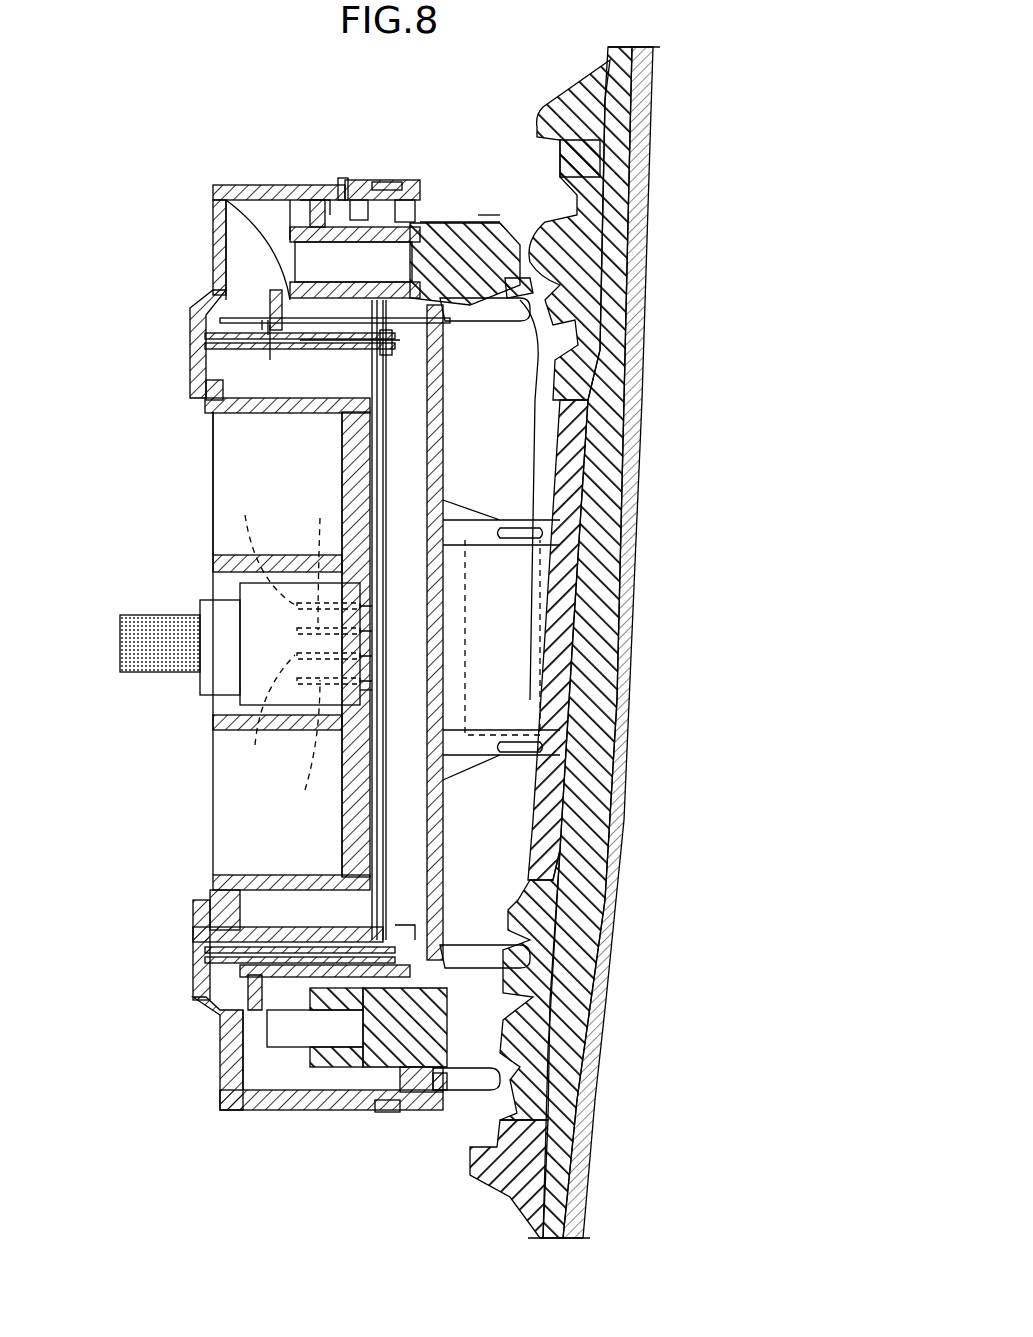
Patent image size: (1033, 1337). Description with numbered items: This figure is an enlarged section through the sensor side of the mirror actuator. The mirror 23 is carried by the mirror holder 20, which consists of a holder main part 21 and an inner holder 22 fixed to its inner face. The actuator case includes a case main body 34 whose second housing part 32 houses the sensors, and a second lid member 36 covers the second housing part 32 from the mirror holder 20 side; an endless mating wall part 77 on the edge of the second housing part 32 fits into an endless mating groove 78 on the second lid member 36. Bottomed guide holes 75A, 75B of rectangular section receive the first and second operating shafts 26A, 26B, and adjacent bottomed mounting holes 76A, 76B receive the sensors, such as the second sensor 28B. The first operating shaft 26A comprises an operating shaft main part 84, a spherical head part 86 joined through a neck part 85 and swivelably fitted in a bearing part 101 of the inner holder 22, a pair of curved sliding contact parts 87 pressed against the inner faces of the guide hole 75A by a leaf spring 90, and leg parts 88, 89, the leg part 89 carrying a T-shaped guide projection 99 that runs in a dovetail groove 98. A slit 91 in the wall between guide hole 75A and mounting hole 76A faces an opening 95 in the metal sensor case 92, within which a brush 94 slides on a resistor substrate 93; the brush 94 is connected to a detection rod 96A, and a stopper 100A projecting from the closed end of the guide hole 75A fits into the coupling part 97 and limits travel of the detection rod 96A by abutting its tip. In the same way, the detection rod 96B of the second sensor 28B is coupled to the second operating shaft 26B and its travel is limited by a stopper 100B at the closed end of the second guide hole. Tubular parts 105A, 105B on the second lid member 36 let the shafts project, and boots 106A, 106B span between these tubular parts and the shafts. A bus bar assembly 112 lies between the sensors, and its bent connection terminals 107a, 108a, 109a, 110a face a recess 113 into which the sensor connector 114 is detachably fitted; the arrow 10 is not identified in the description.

The connector insertion direction 10 is at (85, 643).
The mirror holder 20 is at (706, 447).
The holder main part 21 is at (616, 470).
The inner holder 22 is at (585, 510).
The mirror 23 is at (640, 642).
The first operating shaft 26A is at (488, 220).
The second operating shaft 26B is at (417, 1070).
The second sensor 28B is at (415, 925).
The second housing part 32 is at (226, 185).
The case main body 34 is at (205, 410).
The second lid member 36 is at (420, 182).
The guide hole 75A is at (255, 290).
The guide hole 75B is at (255, 1010).
The mounting hole 76A is at (203, 335).
The mounting hole 76B is at (205, 958).
The mating wall part 77 is at (392, 180).
The mating groove 78 is at (385, 1115).
The operating shaft main part 84 is at (510, 300).
The neck part 85 is at (538, 222).
The spherical head part 86 is at (600, 238).
The curved sliding contact part 87 is at (300, 235).
The leg part 88 is at (360, 340).
The leg part 89 is at (358, 200).
The leaf spring 90 is at (403, 213).
The slit 91 is at (262, 340).
The sensor case 92 is at (273, 340).
The substrate 93 is at (385, 365).
The brush 94 is at (300, 340).
The opening 95 is at (200, 298).
The detection rod 96A is at (214, 210).
The detection rod 96B is at (222, 1095).
The coupling part 97 is at (340, 282).
The dovetail groove 98 is at (310, 195).
The guide projection 99 is at (343, 185).
The stopper 100A is at (250, 285).
The stopper 100B is at (240, 985).
The bearing part 101 is at (540, 320).
The tubular part 105A is at (448, 318).
The tubular part 105B is at (455, 940).
The boot 106A is at (487, 222).
The boot 106B is at (545, 940).
The connection terminal 107a is at (310, 561).
The connection terminal 108a is at (258, 546).
The connection terminal 109a is at (295, 747).
The connection terminal 110a is at (260, 712).
The bus bar assembly 112 is at (395, 636).
The recess 113 is at (370, 690).
The sensor connector 114 is at (250, 677).